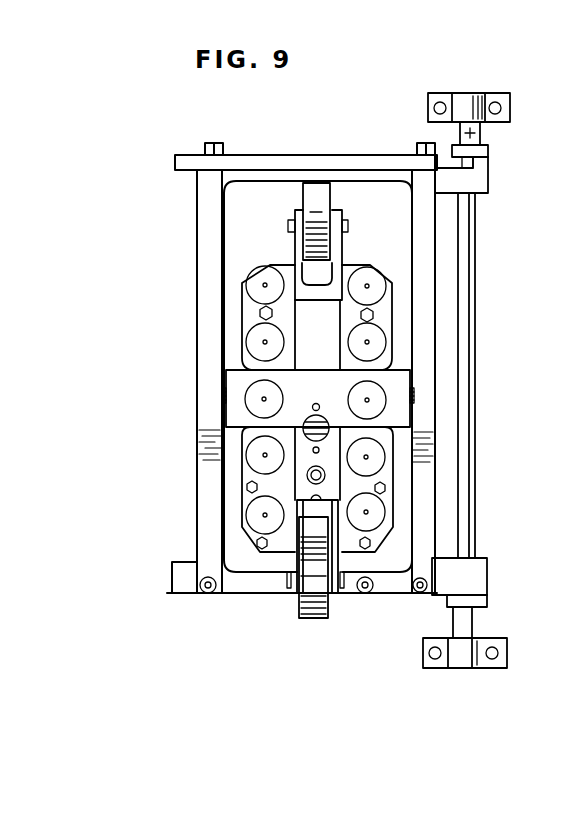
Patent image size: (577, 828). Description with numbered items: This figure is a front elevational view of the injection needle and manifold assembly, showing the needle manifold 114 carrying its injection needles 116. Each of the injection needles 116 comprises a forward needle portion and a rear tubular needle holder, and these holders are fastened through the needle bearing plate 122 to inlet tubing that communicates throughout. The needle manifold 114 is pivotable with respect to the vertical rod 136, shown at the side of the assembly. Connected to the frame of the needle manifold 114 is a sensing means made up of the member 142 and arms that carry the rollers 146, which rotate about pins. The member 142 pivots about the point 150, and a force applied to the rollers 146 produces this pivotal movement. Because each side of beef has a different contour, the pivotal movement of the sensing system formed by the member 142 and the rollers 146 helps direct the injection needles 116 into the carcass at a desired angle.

The needle manifold 114 is at (353, 263).
The injection needles 116 is at (367, 286).
The needle bearing plate 122 is at (250, 312).
The vertical rod 136 is at (480, 131).
The member 142 is at (240, 382).
The rollers 146 is at (318, 195).
The pivot point 150 is at (224, 396).